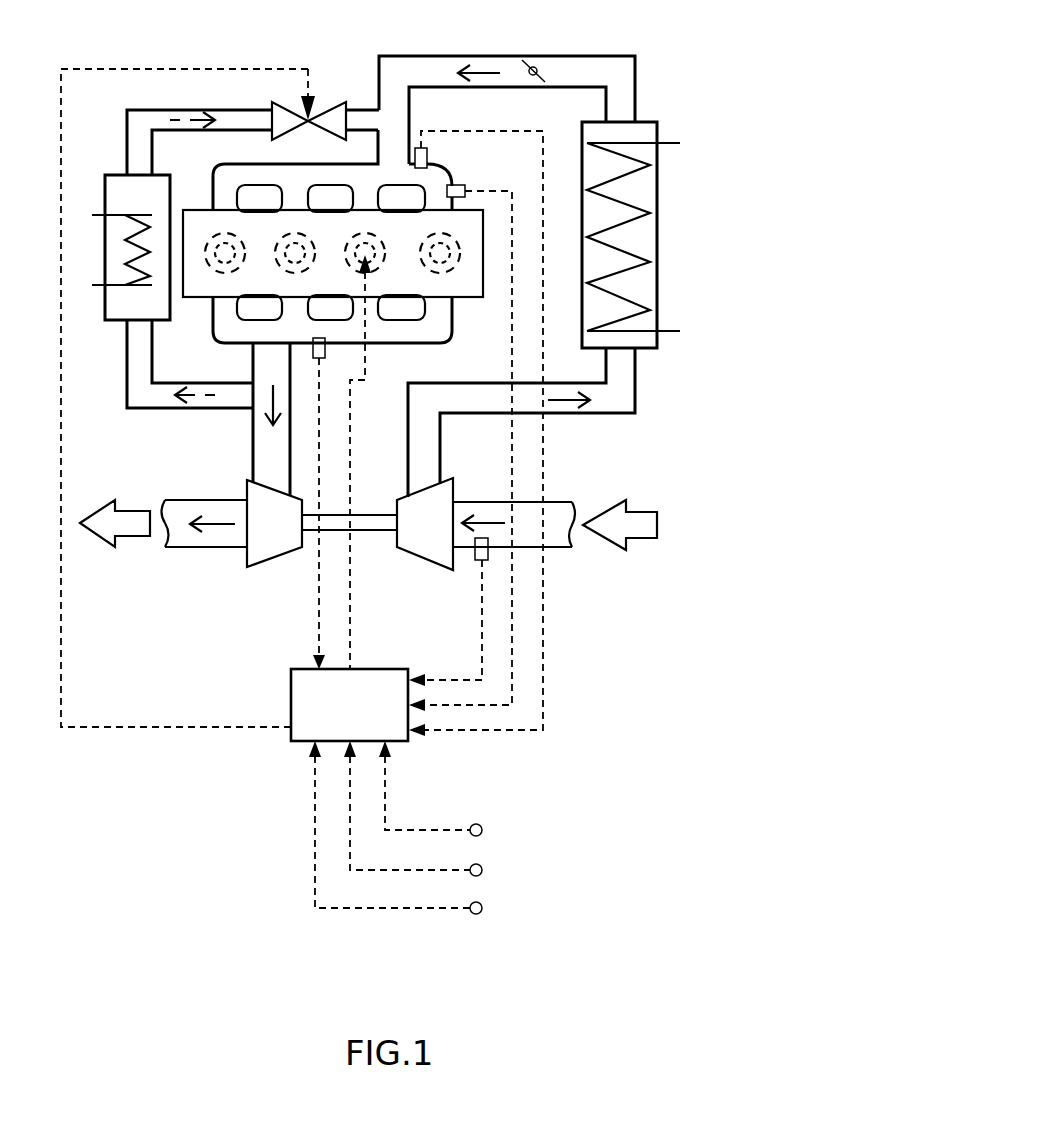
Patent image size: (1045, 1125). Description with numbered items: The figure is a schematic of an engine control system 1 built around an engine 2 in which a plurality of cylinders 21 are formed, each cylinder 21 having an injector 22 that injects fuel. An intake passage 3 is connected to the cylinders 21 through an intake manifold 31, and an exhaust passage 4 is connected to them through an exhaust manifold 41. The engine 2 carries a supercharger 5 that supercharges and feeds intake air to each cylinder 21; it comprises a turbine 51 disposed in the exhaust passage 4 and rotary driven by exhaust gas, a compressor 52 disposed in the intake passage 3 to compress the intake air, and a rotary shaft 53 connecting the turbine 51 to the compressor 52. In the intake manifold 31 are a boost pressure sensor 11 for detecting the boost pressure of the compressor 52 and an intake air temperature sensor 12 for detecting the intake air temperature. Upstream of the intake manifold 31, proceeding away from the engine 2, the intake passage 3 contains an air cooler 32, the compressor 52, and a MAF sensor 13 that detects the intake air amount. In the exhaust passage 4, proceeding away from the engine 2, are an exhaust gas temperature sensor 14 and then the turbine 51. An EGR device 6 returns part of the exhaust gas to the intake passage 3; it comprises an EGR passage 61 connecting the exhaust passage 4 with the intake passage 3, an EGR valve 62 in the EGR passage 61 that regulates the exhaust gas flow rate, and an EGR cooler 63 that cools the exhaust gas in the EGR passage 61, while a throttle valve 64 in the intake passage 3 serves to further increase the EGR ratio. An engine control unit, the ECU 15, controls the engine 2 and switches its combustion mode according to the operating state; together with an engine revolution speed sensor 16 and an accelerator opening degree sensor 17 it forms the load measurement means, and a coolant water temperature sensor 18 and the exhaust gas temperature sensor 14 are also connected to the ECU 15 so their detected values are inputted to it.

The engine control system 1 is at (606, 690).
The engine 2 is at (331, 410).
The intake passage 3 is at (413, 41).
The exhaust passage 4 is at (250, 438).
The supercharger 5 is at (368, 560).
The EGR device 6 is at (207, 389).
The boost pressure sensor 11 is at (428, 158).
The intake air temperature sensor 12 is at (462, 186).
The MAF sensor 13 is at (475, 556).
The exhaust gas temperature sensor 14 is at (313, 346).
The engine control unit (ECU) 15 is at (291, 697).
The engine revolution speed sensor 16 is at (478, 824).
The accelerator opening degree sensor 17 is at (470, 876).
The coolant water temperature sensor 18 is at (478, 918).
The cylinder 21 is at (368, 243).
The injector 22 is at (372, 262).
The intake manifold 31 is at (290, 168).
The air cooler 32 is at (655, 240).
The exhaust manifold 41 is at (385, 338).
The turbine 51 is at (296, 535).
The compressor 52 is at (446, 535).
The rotary shaft 53 is at (288, 570).
The EGR passage 61 is at (165, 108).
The EGR valve 62 is at (324, 102).
The EGR cooler 63 is at (104, 300).
The throttle valve 64 is at (540, 60).